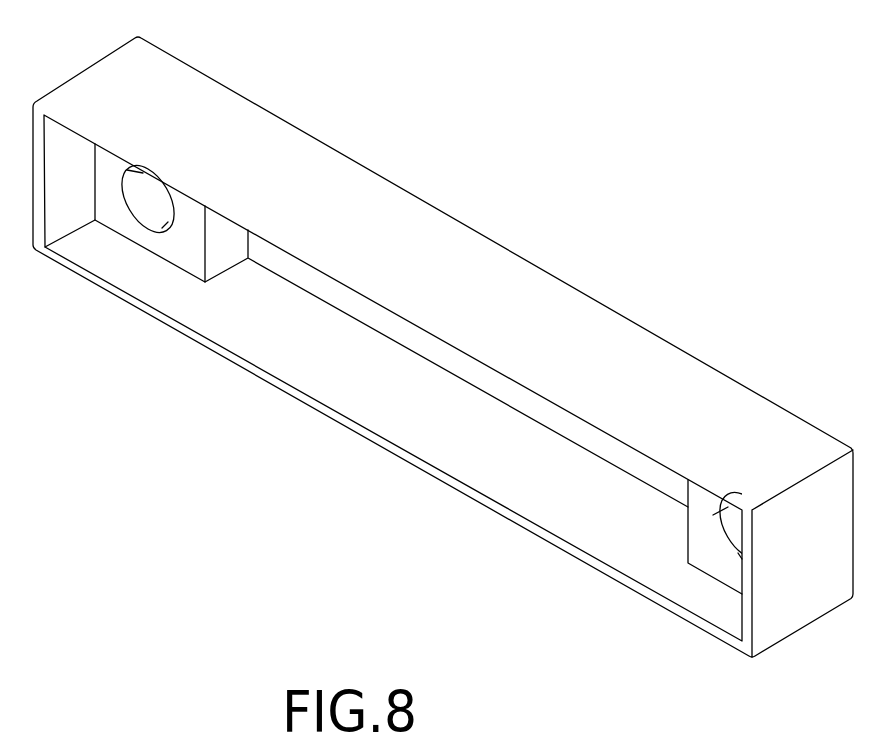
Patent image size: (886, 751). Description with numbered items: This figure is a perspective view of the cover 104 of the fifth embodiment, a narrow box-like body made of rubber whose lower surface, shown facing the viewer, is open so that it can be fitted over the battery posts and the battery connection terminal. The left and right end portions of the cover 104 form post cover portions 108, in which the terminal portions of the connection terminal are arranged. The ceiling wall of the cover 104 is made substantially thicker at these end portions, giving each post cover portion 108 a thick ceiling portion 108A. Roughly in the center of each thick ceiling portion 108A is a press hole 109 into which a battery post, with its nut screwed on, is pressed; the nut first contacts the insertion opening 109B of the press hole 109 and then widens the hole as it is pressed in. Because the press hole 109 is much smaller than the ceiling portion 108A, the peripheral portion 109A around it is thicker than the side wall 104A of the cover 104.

The cover 104 is at (434, 340).
The side wall 104A is at (388, 450).
The post cover portion 108 is at (220, 117).
The thick ceiling portion 108A is at (105, 175).
The press hole 109 is at (168, 188).
The peripheral portion 109A is at (245, 252).
The insertion opening 109B is at (128, 168).